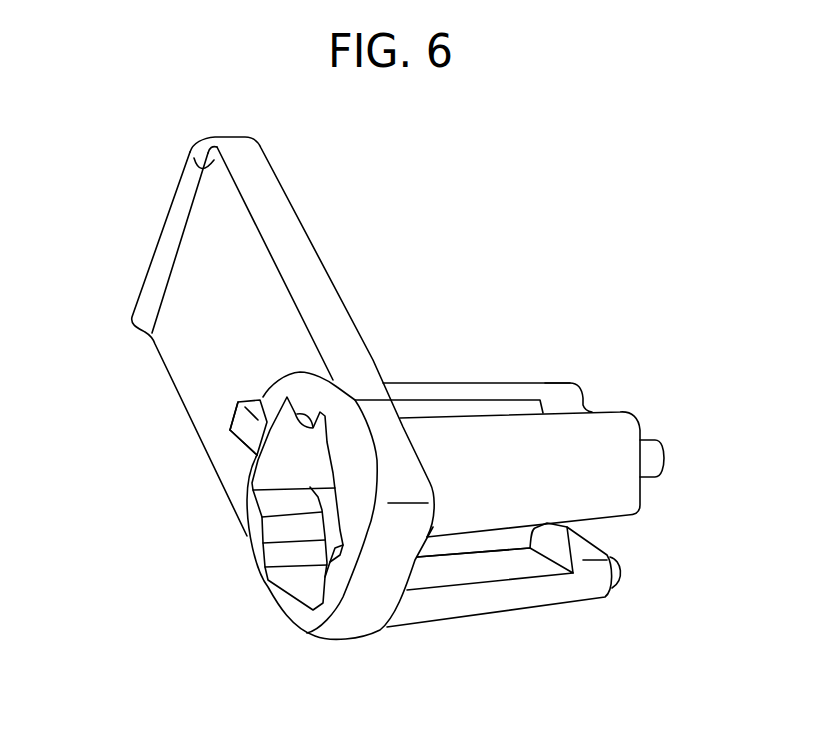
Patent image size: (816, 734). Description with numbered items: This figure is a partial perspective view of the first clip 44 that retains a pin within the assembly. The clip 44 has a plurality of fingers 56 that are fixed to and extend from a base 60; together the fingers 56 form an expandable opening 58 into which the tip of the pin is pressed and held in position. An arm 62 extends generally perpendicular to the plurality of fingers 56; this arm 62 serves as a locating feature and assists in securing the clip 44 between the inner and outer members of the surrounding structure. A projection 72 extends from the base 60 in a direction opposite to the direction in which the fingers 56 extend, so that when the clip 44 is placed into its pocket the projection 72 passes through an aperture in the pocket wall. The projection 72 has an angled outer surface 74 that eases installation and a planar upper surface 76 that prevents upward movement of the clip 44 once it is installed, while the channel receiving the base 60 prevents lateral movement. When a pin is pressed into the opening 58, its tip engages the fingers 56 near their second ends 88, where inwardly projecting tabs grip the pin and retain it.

The first clip 44 is at (330, 211).
The plurality of fingers 56 is at (452, 383).
The expandable opening 58 is at (627, 537).
The base 60 is at (290, 630).
The arm 62 is at (163, 371).
The projection 72 is at (230, 437).
The angled outer surface 74 is at (243, 440).
The planar upper surface 76 is at (236, 410).
The second ends 88 is at (548, 380).